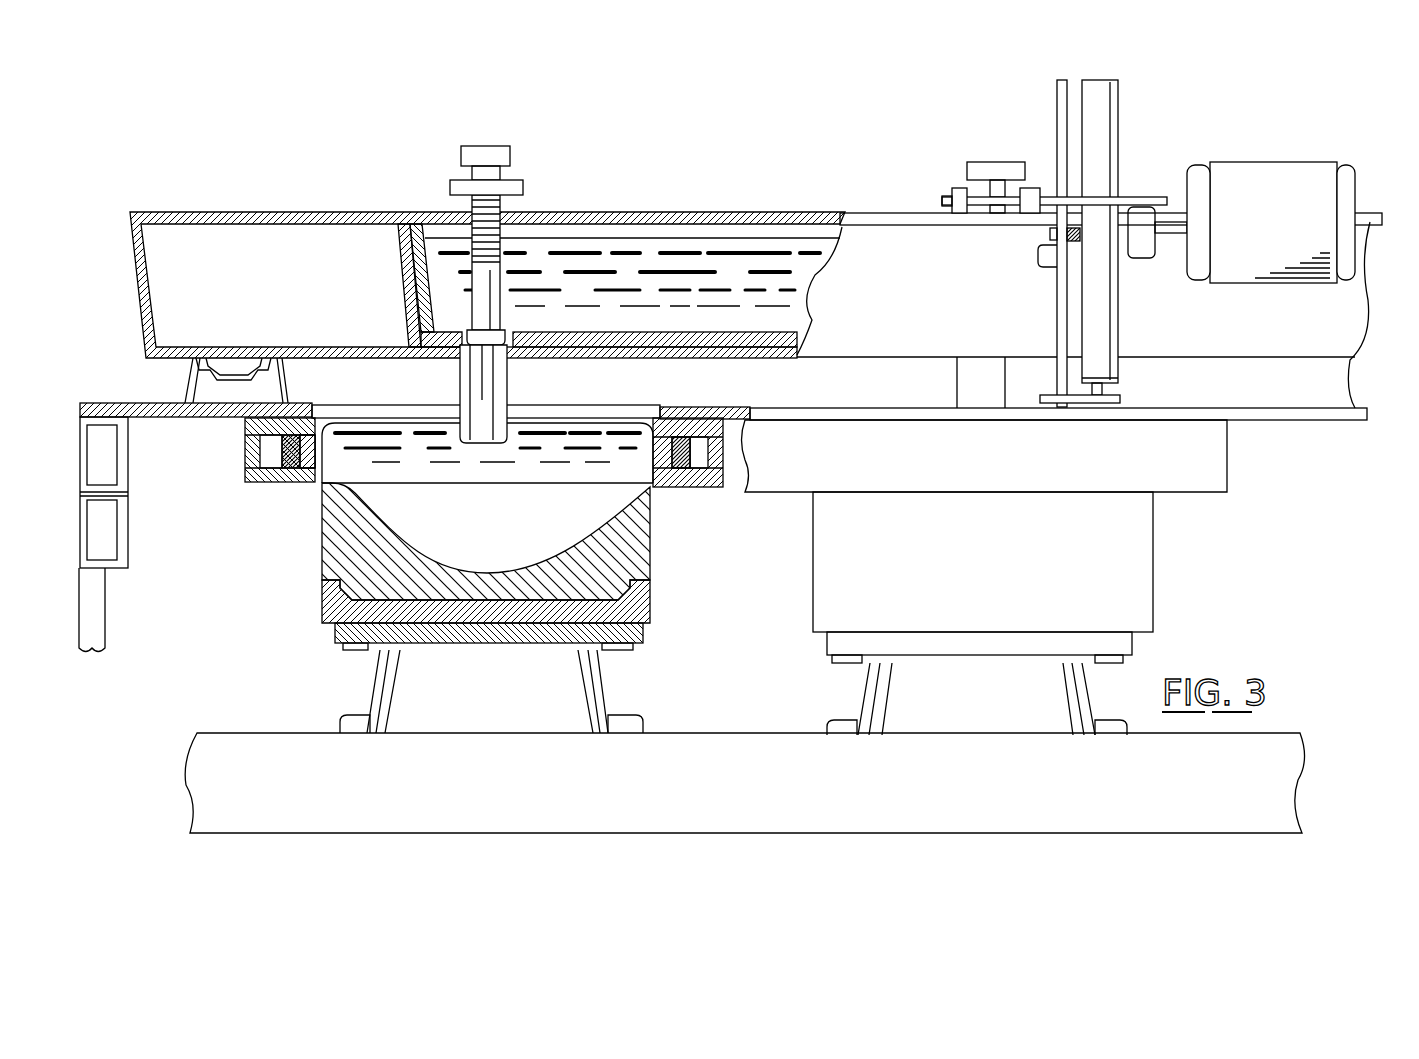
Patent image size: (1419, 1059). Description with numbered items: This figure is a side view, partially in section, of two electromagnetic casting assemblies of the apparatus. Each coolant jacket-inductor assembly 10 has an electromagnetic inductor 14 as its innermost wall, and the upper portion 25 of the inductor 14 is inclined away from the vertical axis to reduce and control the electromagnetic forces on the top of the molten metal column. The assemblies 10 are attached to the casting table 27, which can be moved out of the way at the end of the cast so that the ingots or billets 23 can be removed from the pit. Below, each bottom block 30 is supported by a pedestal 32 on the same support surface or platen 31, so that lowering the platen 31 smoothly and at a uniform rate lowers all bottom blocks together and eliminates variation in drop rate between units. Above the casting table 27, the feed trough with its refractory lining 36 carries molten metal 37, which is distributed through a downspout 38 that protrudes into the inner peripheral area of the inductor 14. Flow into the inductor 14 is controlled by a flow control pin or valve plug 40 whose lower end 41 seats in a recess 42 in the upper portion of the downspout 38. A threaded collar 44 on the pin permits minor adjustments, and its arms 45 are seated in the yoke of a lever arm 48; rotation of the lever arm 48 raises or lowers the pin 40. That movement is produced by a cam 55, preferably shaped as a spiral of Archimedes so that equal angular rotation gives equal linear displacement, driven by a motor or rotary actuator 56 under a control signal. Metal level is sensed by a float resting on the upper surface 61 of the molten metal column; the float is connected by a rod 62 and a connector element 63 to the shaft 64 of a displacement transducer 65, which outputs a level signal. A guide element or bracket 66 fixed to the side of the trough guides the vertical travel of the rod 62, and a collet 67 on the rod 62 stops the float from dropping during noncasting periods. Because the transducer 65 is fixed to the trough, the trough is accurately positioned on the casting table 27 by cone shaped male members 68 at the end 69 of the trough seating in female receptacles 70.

The coolant jacket-inductor assembly 10 is at (697, 488).
The electromagnetic inductor 14 is at (647, 470).
The ingot or billet 23 is at (630, 565).
The upper portion of electromagnetic inductor 25 is at (322, 420).
The casting table 27 is at (765, 408).
The bottom block 30 is at (650, 612).
The support surface or platen 31 is at (297, 823).
The pedestal 32 is at (335, 636).
The refractory lining 36 is at (718, 340).
The molten metal 37 is at (720, 245).
The downspout 38 is at (510, 391).
The flow control pin or valve plug 40 is at (505, 258).
The lower end of flow control pin 41 is at (505, 319).
The recess 42 is at (418, 303).
The threaded collar 44 is at (512, 184).
The arms of collar 45 is at (452, 187).
The lever arm 48 is at (1132, 198).
The cam 55 is at (1140, 250).
The motor or rotary actuator 56 is at (1300, 175).
The upper surface of molten metal column 61 is at (585, 425).
The rod 62 is at (1057, 306).
The connector element 63 is at (1122, 400).
The shaft of displacement transducer 64 is at (1110, 390).
The displacement transducer 65 is at (1105, 131).
The guide element or bracket 66 is at (1040, 258).
The collet 67 is at (1053, 234).
The cone shaped male member 68 is at (232, 356).
The end of trough 69 is at (136, 268).
The female receptacle 70 is at (270, 386).